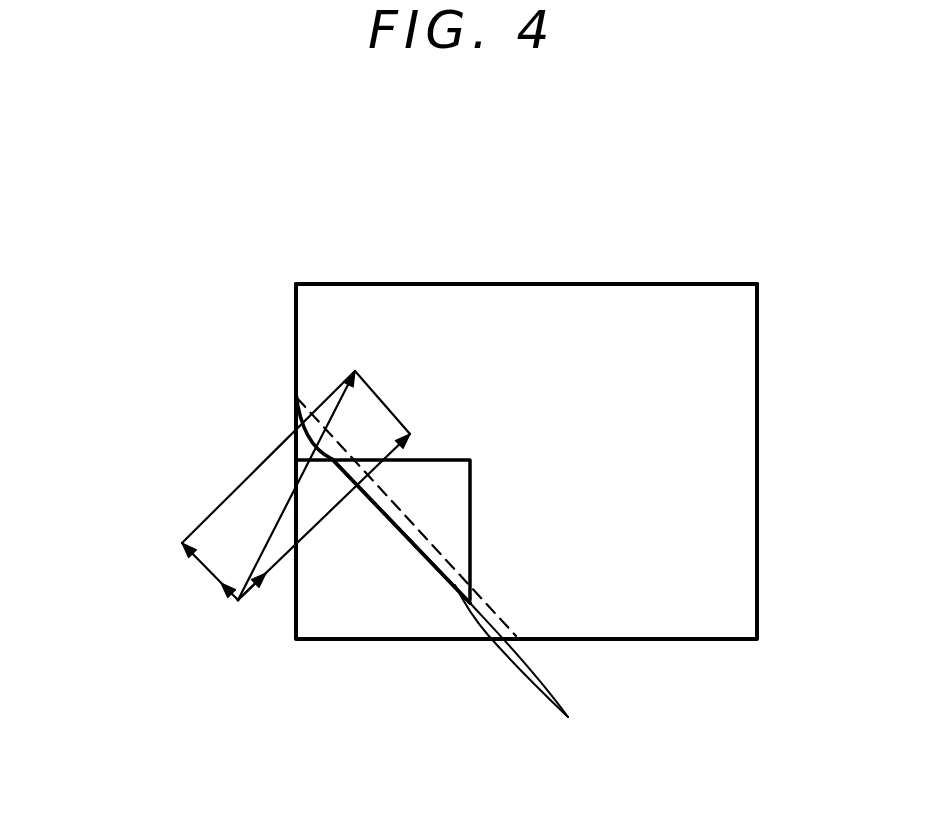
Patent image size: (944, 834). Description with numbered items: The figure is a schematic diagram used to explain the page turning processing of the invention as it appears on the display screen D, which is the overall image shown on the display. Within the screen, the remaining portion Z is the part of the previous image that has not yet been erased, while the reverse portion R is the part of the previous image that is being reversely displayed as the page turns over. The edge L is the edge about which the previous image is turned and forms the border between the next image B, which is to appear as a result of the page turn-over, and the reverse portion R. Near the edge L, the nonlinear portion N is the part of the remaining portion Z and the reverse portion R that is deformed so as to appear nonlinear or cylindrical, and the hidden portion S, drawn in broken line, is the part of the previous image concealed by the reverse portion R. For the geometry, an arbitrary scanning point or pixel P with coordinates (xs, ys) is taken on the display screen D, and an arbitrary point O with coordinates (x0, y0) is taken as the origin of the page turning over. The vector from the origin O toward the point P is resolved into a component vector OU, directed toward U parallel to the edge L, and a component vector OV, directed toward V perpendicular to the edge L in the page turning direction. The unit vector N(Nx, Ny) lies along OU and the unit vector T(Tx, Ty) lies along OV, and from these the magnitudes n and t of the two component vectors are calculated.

The display screen D is at (690, 641).
The remaining portion Z is at (438, 292).
The reverse portion R is at (460, 482).
The nonlinear portion N is at (123, 637).
The hidden portion S is at (457, 525).
The edge L is at (438, 573).
The next image B is at (401, 617).
The component vector endpoint U is at (180, 544).
The component vector endpoint V is at (412, 434).
The arbitrary point P is at (357, 370).
The unit vector T is at (251, 596).
The origin O is at (238, 607).